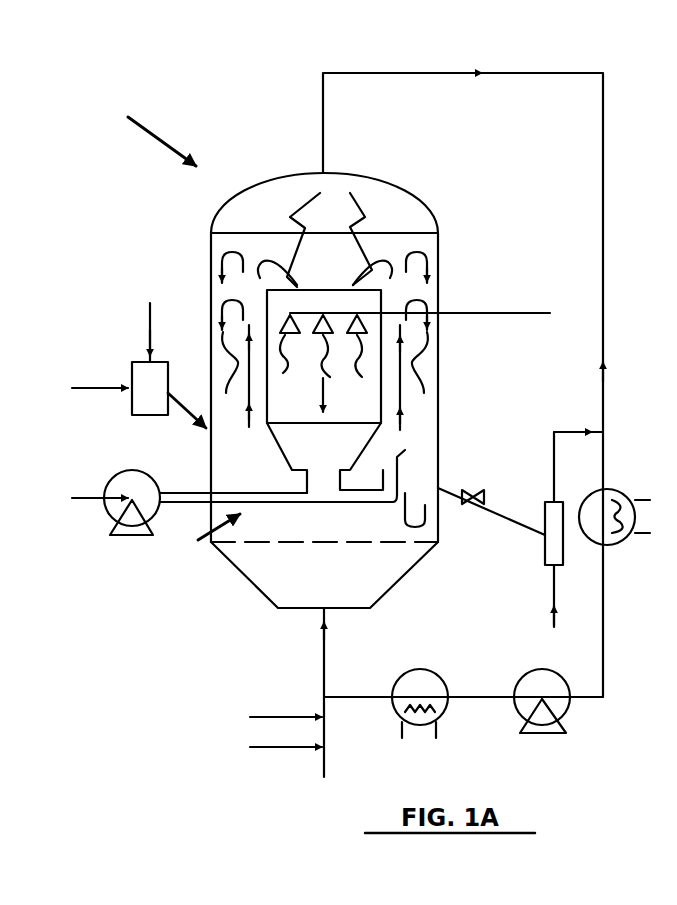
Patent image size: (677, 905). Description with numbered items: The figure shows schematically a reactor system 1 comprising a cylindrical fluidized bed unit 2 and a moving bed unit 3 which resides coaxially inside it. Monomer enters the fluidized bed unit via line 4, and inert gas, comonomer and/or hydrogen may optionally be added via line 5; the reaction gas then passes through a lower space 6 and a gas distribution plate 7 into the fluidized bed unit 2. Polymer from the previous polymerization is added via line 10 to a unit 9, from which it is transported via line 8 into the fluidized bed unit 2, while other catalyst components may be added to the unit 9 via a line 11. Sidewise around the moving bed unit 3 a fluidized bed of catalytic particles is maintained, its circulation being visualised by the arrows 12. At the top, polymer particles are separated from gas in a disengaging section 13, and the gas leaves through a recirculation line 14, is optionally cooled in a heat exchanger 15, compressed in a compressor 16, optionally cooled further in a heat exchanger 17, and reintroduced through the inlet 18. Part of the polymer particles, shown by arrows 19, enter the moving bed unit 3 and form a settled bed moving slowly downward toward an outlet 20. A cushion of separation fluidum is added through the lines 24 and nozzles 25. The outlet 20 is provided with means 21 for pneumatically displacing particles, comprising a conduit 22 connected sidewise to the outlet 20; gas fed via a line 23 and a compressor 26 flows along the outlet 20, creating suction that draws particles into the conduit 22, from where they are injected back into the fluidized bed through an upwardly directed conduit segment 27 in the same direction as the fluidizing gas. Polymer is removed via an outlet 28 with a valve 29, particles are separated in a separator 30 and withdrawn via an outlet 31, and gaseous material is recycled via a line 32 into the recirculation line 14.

The reactor system 1 is at (150, 130).
The fluidized bed unit 2 is at (438, 253).
The moving bed unit 3 is at (382, 387).
The line 4 is at (266, 713).
The line 5 is at (266, 747).
The lower space 6 is at (257, 574).
The gas distribution plate 7 is at (293, 543).
The line 8 is at (177, 403).
The unit 9 is at (153, 405).
The line 10 is at (150, 315).
The line 11 is at (103, 390).
The arrows 12 is at (468, 414).
The disengaging section 13 is at (287, 183).
The recirculation line 14 is at (558, 74).
The heat exchanger 15 is at (622, 488).
The compressor 16 is at (523, 670).
The heat exchanger 17 is at (421, 672).
The inlet 18 is at (322, 643).
The arrows 19 is at (324, 233).
The outlet 20 is at (307, 482).
The means for pneumatically displacing polymerized particles 21 is at (198, 540).
The conduit 22 is at (278, 505).
The line 23 is at (80, 500).
The lines 24 is at (463, 313).
The nozzles 25 is at (321, 363).
The compressor 26 is at (150, 508).
The upwardly directed conduit segment 27 is at (405, 451).
The outlet 28 is at (445, 484).
The valve 29 is at (470, 507).
The separator 30 is at (545, 552).
The outlet 31 is at (550, 578).
The line 32 is at (563, 430).